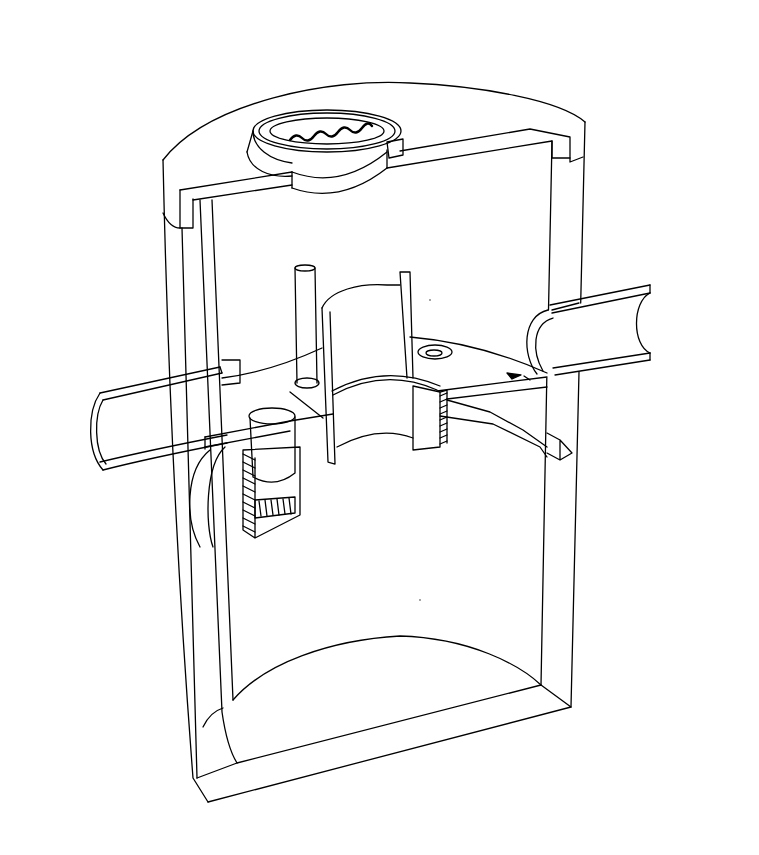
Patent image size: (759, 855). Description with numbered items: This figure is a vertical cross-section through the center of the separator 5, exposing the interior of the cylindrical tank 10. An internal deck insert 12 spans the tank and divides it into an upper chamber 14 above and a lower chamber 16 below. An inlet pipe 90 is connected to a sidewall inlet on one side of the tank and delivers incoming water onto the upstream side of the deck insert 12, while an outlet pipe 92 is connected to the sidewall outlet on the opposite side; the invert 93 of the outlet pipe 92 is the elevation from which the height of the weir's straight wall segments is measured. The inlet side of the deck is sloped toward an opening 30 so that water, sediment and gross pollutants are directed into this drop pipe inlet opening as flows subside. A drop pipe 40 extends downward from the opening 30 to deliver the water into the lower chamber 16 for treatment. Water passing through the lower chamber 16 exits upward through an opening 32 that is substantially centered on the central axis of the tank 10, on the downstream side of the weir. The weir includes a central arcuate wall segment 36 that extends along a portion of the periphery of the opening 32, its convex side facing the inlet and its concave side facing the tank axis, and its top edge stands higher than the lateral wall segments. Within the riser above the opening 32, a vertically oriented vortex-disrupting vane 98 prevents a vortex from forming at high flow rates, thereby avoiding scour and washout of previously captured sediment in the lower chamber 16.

The separator 5 is at (604, 92).
The tank 10 is at (168, 293).
The deck insert 12 is at (490, 348).
The upper chamber 14 is at (468, 233).
The lower chamber 16 is at (438, 587).
The opening 30 is at (262, 416).
The opening 32 is at (436, 346).
The central arcuate wall segment 36 is at (380, 285).
The drop pipe 40 is at (295, 450).
The inlet pipe 90 is at (120, 394).
The outlet pipe 92 is at (612, 367).
The invert 93 is at (545, 368).
The vortex-disrupting vane 98 is at (431, 452).